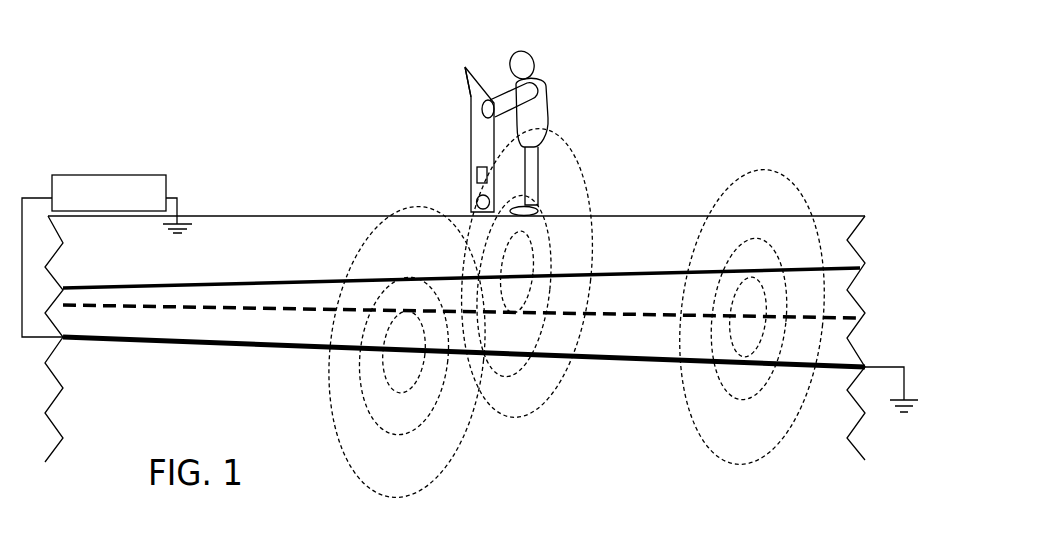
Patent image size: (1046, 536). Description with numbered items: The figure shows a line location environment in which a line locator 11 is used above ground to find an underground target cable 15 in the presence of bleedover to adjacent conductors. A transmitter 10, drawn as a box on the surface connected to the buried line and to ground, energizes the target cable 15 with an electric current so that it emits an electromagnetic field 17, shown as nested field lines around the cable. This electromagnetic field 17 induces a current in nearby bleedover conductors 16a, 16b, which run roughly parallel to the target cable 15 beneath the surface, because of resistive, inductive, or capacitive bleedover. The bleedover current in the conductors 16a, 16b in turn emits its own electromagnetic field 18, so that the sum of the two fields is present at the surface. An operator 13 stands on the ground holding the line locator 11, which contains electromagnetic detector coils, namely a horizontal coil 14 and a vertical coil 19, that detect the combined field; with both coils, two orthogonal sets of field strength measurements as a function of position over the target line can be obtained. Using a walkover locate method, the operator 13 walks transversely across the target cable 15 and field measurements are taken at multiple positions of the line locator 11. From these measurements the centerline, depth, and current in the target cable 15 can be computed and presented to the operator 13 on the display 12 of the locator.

The transmitter 10 is at (78, 175).
The line locator 11 is at (468, 143).
The display 12 is at (487, 80).
The operator 13 is at (552, 100).
The horizontal coil 14 is at (478, 202).
The target cable 15 is at (610, 353).
The conductor 16a is at (330, 278).
The conductor 16b is at (672, 317).
The electromagnetic field 17 is at (350, 370).
The electromagnetic field 18 is at (538, 370).
The vertical coil 19 is at (473, 180).